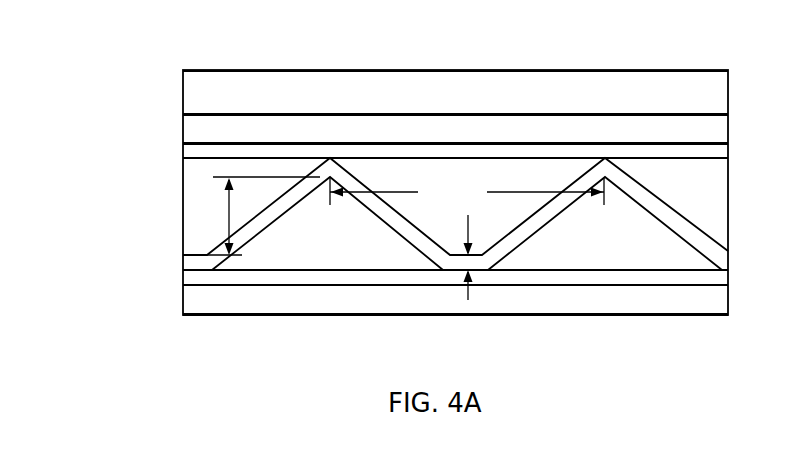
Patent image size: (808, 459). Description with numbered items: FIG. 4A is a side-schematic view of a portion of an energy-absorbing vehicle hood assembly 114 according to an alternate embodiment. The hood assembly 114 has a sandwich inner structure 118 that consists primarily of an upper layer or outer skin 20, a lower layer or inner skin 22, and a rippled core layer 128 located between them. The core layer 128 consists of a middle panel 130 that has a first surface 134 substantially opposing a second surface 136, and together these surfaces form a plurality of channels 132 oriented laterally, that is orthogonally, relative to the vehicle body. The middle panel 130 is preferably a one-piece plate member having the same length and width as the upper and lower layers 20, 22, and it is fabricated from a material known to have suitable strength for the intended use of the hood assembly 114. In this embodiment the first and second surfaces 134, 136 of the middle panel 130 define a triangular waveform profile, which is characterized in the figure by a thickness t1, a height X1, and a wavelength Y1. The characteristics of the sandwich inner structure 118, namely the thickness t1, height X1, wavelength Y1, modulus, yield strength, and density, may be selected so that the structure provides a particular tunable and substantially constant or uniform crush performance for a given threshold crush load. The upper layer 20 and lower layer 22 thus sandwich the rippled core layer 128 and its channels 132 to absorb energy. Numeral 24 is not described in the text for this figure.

The energy-absorbing vehicle hood assembly 114 is at (272, 85).
The first face sheet 24 is at (390, 127).
The upper layer or outer skin 20 is at (500, 150).
The rippled core layer 128 is at (538, 160).
The middle panel 130 is at (482, 175).
The first surface 134 is at (684, 203).
The second surface 136 is at (659, 229).
The channels 132 is at (452, 220).
The lower layer or inner skin 22 is at (283, 280).
The sandwich inner structure 118 is at (564, 308).
The height X1 is at (254, 216).
The wavelength Y1 is at (467, 191).
The thickness t1 is at (482, 257).